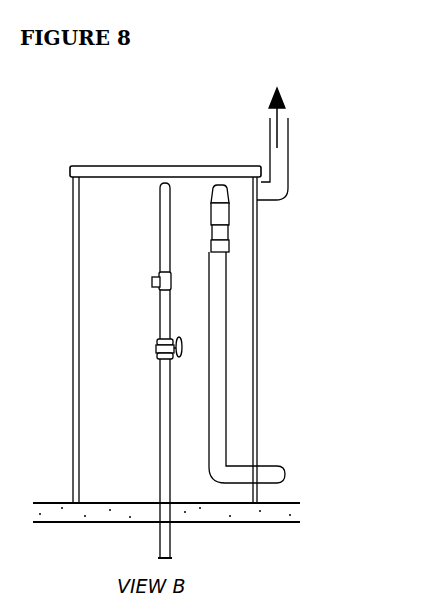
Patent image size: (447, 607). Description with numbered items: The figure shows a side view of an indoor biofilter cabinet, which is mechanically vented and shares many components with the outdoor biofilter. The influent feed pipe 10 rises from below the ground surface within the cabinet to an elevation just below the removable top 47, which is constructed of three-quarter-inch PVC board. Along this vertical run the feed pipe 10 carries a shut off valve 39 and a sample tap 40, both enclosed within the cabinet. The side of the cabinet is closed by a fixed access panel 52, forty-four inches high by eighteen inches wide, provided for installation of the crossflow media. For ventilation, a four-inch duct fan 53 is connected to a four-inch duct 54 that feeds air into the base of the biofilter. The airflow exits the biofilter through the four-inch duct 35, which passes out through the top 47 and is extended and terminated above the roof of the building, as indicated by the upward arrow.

The influent feed pipe 10 is at (160, 230).
The duct 35 is at (269, 152).
The shut off valve 39 is at (157, 349).
The sample tap 40 is at (150, 277).
The removable top 47 is at (97, 166).
The fixed access panel 52 is at (75, 277).
The duct fan 53 is at (211, 213).
The duct 54 is at (209, 410).